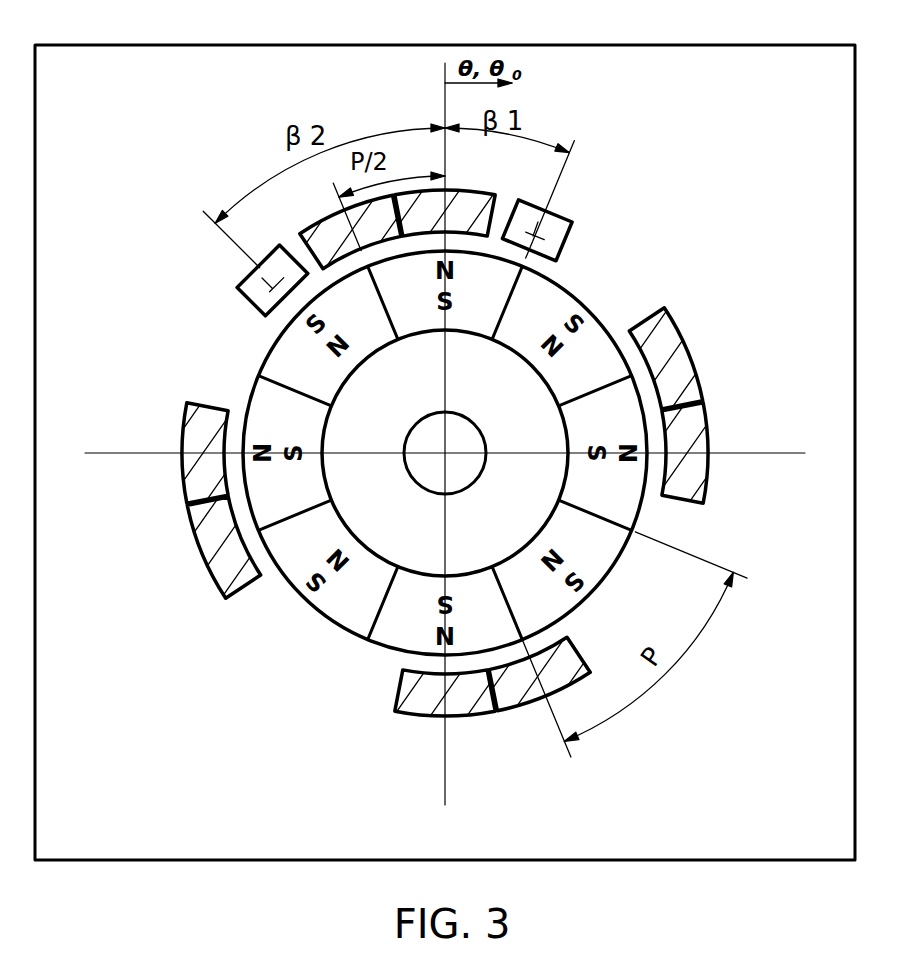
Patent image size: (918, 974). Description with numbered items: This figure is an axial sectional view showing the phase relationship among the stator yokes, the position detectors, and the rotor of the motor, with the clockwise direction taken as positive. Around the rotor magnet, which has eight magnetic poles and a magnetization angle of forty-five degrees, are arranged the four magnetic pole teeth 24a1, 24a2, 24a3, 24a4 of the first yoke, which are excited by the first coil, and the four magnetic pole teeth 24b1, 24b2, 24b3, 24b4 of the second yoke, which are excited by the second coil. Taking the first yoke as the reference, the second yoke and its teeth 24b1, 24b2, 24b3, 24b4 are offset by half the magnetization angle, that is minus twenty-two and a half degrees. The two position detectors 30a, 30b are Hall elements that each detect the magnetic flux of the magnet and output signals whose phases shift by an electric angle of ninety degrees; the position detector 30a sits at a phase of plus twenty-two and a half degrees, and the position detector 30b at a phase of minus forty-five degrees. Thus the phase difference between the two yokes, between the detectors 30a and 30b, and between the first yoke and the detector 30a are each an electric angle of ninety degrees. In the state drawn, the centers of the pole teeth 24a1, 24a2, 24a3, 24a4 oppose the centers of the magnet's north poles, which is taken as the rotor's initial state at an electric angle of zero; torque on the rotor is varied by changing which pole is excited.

The magnetic pole tooth of the yoke 24a 24a1 is at (490, 195).
The magnetic pole tooth of the yoke 24a 24a2 is at (705, 440).
The magnetic pole tooth of the yoke 24a 24a3 is at (397, 712).
The magnetic pole tooth of the yoke 24a 24a4 is at (178, 478).
The magnetic pole tooth of the yoke 24b 24b1 is at (318, 262).
The magnetic pole tooth of the yoke 24b 24b2 is at (686, 324).
The magnetic pole tooth of the yoke 24b 24b3 is at (552, 700).
The magnetic pole tooth of the yoke 24b 24b4 is at (217, 587).
The position detector 30a is at (573, 223).
The position detector 30b is at (248, 300).